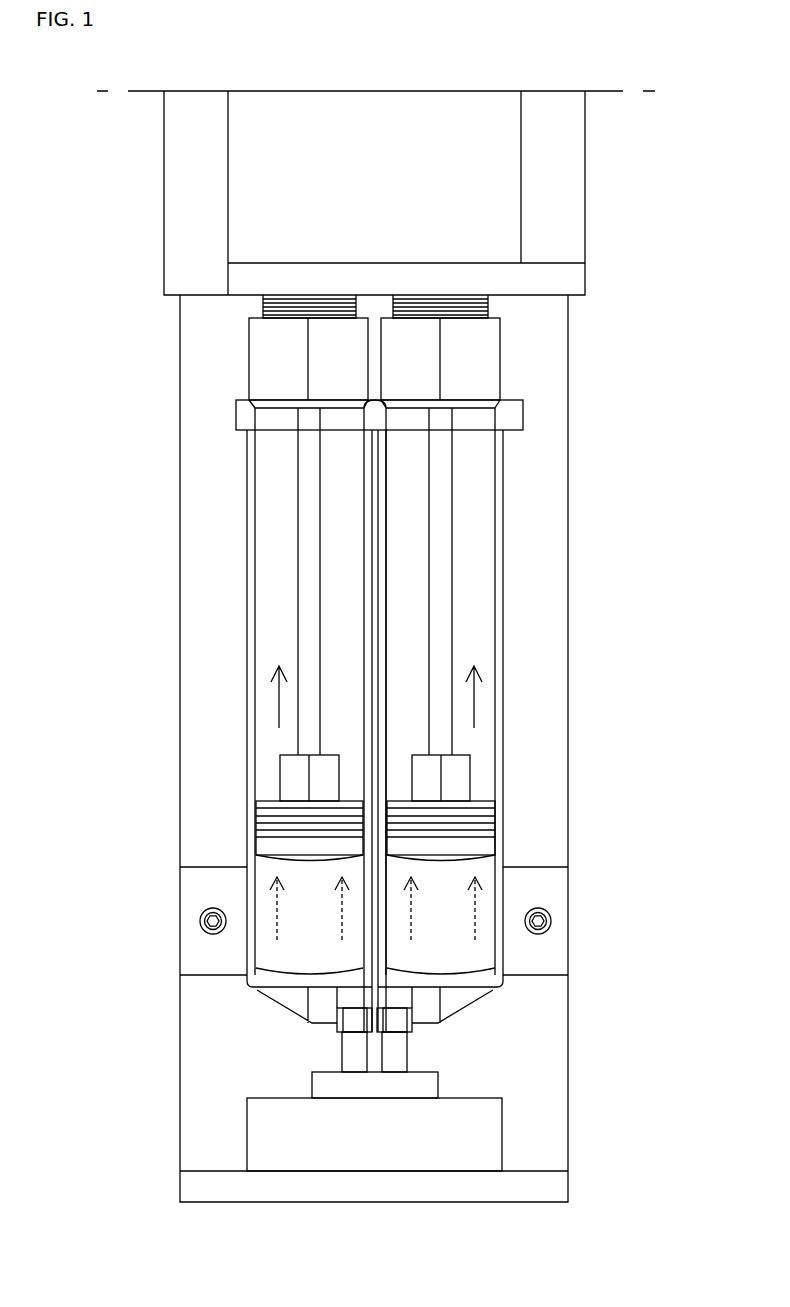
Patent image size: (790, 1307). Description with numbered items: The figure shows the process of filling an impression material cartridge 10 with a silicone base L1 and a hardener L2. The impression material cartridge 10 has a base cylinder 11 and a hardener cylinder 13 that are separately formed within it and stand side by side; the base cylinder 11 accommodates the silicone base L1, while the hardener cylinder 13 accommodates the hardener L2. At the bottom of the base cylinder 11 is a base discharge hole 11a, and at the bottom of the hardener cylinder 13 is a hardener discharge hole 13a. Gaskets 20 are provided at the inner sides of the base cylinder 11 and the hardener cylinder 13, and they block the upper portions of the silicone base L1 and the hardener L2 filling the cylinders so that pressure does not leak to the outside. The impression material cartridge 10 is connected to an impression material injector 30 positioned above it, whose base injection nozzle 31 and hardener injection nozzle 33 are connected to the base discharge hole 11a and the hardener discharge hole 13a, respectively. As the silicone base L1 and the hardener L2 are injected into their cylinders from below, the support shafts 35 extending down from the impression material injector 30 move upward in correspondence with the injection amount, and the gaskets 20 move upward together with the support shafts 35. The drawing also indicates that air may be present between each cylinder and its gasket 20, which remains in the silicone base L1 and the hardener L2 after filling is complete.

The impression material cartridge 10 is at (473, 716).
The base cylinder 11 is at (503, 680).
The base discharge hole 11a is at (392, 1007).
The hardener cylinder 13 is at (368, 630).
The hardener discharge hole 13a is at (353, 1007).
The gasket 20 is at (262, 823).
The impression material injector 30 is at (136, 547).
The base injection nozzle 31 is at (400, 1048).
The hardener injection nozzle 33 is at (347, 1048).
The support shaft 35 is at (441, 573).
The silicone base L1 is at (458, 950).
The hardener L2 is at (270, 957).